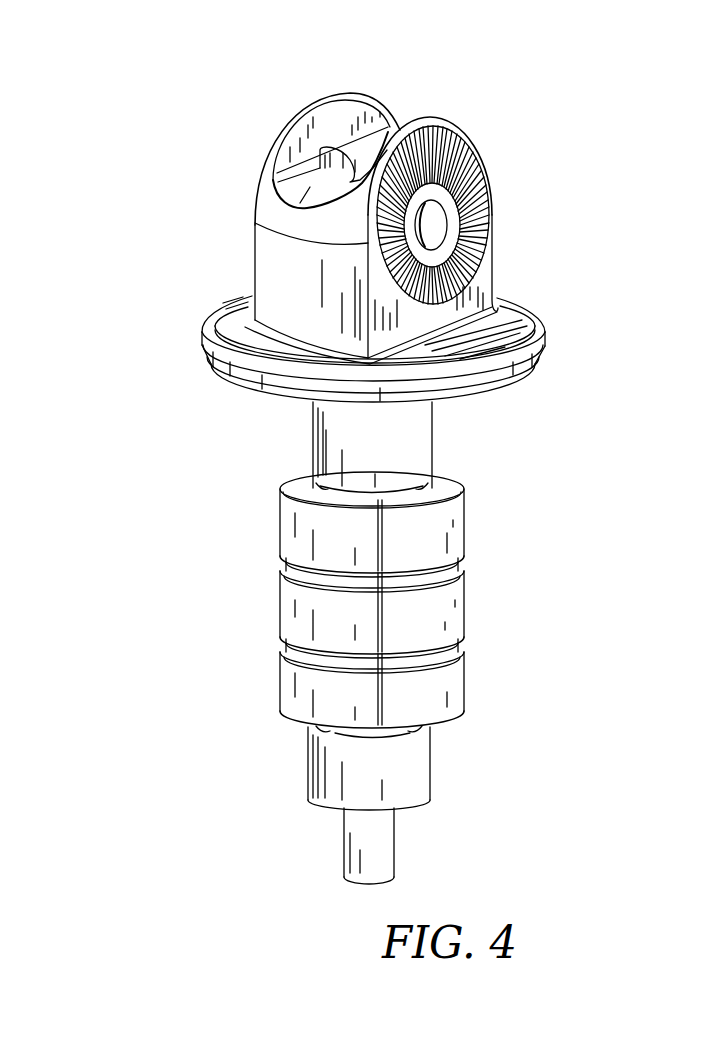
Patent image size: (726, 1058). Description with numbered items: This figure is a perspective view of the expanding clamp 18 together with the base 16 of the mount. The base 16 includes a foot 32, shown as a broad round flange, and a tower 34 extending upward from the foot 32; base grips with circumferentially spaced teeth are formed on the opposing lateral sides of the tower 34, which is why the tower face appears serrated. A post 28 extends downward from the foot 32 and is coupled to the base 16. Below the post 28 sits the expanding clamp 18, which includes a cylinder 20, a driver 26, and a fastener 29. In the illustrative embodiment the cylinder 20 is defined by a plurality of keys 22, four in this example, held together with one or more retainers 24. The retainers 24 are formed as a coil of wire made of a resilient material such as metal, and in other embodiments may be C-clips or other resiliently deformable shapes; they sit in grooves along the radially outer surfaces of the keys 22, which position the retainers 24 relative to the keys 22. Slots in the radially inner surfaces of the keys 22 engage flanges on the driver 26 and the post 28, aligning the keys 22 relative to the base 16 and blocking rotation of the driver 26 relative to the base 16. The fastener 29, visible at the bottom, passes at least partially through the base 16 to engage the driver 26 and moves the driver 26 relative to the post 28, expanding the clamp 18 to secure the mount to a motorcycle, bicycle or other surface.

The base 16 is at (495, 160).
The tower 34 is at (500, 180).
The foot 32 is at (556, 332).
The post 28 is at (452, 442).
The expanding clamp 18 is at (464, 580).
The keys 22 is at (347, 540).
The cylinder 20 is at (487, 628).
The retainers 24 is at (487, 640).
The driver 26 is at (445, 772).
The fastener 29 is at (342, 890).